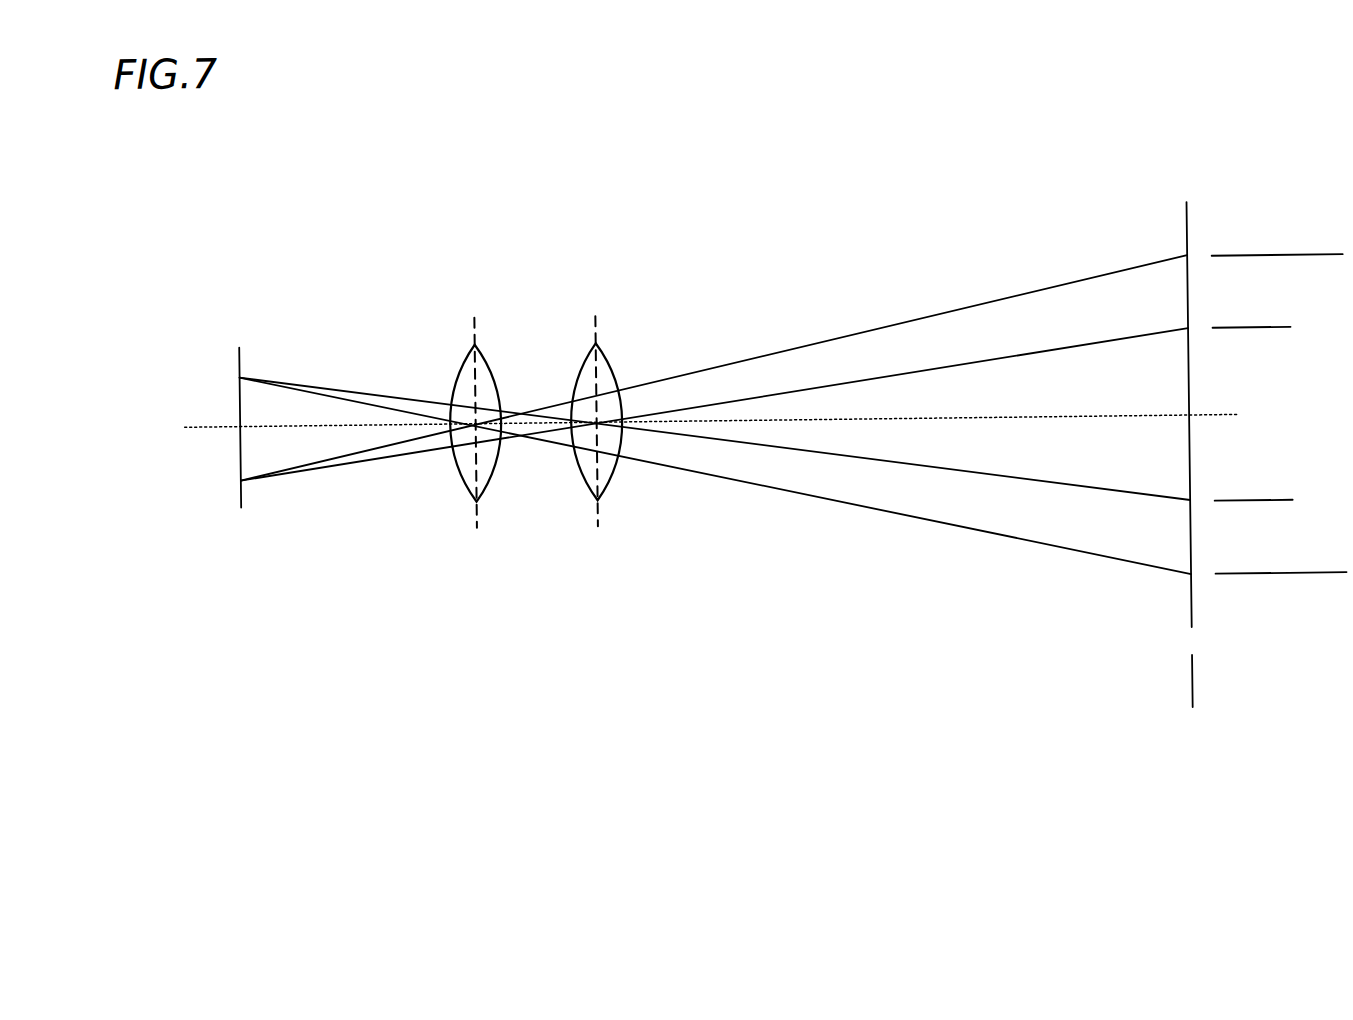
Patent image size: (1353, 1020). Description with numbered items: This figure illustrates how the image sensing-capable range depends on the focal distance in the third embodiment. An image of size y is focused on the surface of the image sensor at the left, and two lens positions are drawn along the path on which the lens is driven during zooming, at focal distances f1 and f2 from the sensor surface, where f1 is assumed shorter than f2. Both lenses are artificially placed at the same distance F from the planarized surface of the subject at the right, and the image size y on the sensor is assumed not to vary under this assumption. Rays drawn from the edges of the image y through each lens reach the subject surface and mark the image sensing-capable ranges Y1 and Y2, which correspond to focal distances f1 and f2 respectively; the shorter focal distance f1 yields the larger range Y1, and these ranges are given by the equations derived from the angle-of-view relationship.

The image size y is at (185, 343).
The focal distance f1 is at (241, 661).
The focal distance f2 is at (598, 555).
The distance from the lens to the surface of the subject F is at (1190, 689).
The image sensing-capable range Y1 is at (1317, 262).
The image sensing-capable range Y2 is at (1266, 334).